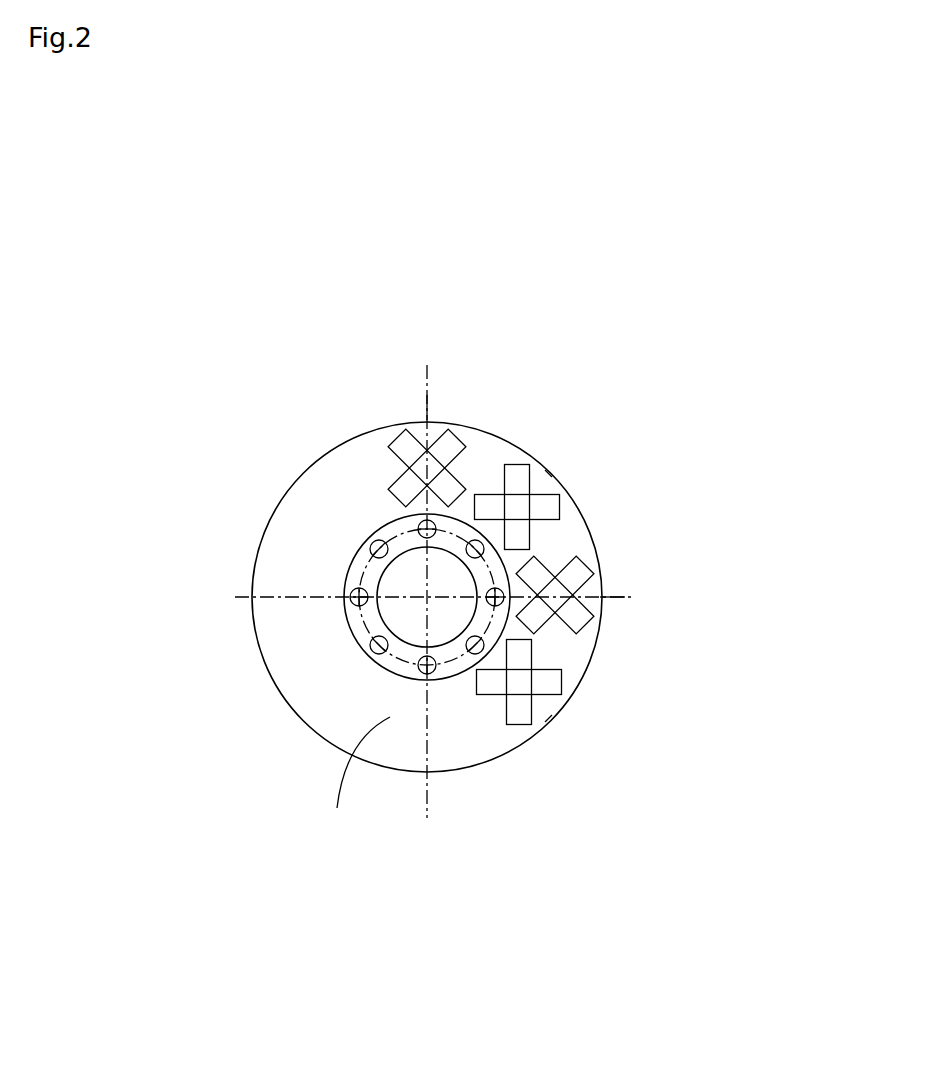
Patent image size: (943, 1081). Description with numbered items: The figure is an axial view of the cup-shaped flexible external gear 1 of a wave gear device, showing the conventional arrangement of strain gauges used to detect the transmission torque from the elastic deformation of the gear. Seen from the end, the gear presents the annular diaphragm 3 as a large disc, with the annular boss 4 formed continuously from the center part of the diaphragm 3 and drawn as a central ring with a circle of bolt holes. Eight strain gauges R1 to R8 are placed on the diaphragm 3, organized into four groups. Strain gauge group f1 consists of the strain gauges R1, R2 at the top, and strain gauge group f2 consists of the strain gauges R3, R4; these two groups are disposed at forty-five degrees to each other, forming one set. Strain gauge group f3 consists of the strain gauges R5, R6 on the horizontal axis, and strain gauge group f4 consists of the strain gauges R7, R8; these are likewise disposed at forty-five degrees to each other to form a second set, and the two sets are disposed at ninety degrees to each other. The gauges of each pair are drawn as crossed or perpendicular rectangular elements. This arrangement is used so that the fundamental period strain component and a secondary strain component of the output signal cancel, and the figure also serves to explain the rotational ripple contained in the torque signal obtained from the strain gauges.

The flexible external gear 1 is at (482, 800).
The diaphragm 3 is at (359, 777).
The boss 4 is at (360, 632).
The strain gauge R1 is at (410, 468).
The strain gauge R2 is at (443, 468).
The strain gauge R3 is at (499, 507).
The strain gauge R4 is at (519, 521).
The strain gauge R5 is at (555, 585).
The strain gauge R6 is at (555, 606).
The strain gauge R7 is at (536, 682).
The strain gauge R8 is at (518, 698).
The strain gauge group f1 is at (444, 408).
The strain gauge group f2 is at (560, 463).
The strain gauge group f3 is at (616, 581).
The strain gauge group f4 is at (564, 726).